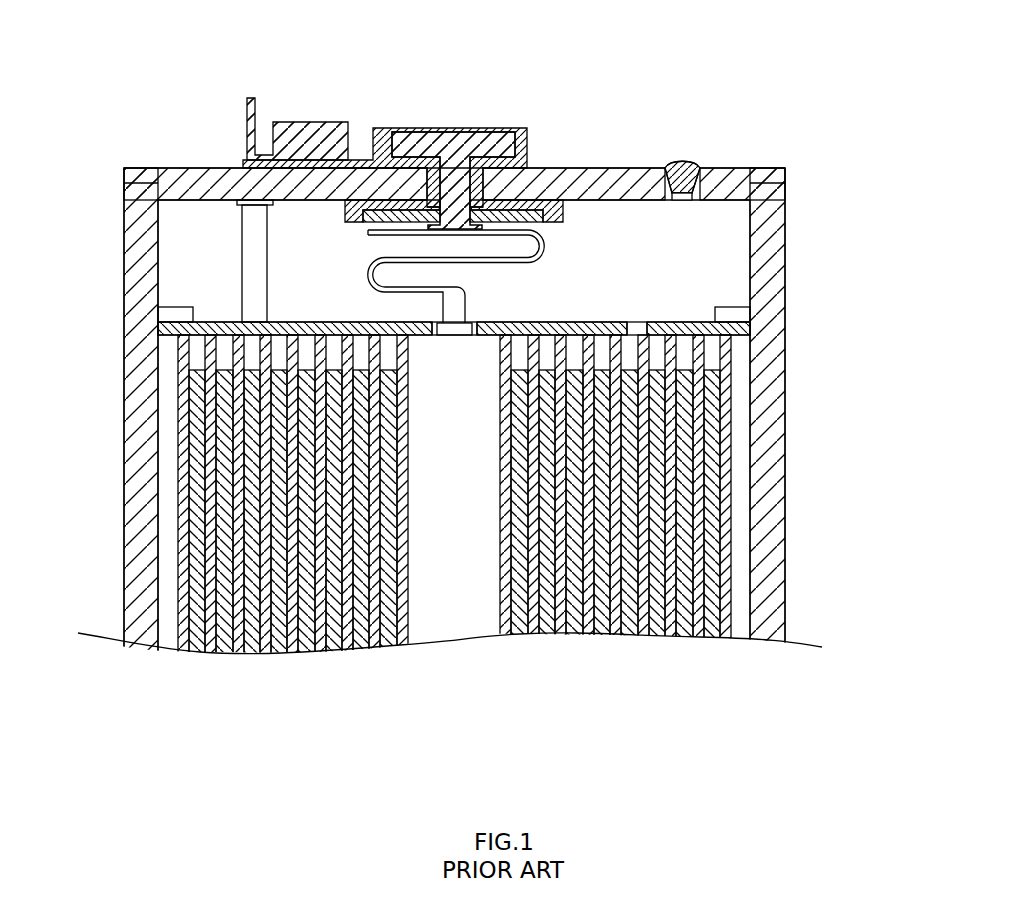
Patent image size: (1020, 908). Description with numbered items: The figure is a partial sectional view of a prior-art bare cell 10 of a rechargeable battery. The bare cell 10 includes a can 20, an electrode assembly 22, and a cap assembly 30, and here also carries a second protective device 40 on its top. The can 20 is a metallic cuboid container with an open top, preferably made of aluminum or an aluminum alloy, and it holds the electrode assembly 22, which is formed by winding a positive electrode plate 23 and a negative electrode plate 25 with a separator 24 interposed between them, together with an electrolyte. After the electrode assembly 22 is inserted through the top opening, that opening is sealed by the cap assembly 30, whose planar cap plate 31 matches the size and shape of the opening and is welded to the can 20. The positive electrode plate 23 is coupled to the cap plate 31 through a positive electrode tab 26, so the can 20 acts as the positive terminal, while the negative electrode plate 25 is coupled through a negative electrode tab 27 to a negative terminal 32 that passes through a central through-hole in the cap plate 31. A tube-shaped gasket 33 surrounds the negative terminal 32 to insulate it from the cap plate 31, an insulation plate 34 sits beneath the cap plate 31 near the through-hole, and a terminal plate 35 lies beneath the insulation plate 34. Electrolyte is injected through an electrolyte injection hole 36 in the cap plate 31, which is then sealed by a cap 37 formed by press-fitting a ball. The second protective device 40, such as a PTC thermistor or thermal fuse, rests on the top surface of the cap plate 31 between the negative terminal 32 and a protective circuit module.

The bare cell 10 is at (803, 186).
The can 20 is at (775, 513).
The electrode assembly 22 is at (737, 423).
The positive electrode plate 23 is at (708, 633).
The separator 24 is at (725, 633).
The negative electrode plate 25 is at (683, 633).
The positive electrode tab 26 is at (247, 253).
The negative electrode tab 27 is at (367, 275).
The cap assembly 30 is at (610, 125).
The cap plate 31 is at (183, 177).
The negative terminal 32 is at (450, 146).
The gasket 33 is at (520, 147).
The insulation plate 34 is at (345, 207).
The terminal plate 35 is at (545, 222).
The electrolyte injection hole 36 is at (681, 202).
The cap 37 is at (682, 162).
The second protective device 40 is at (285, 142).